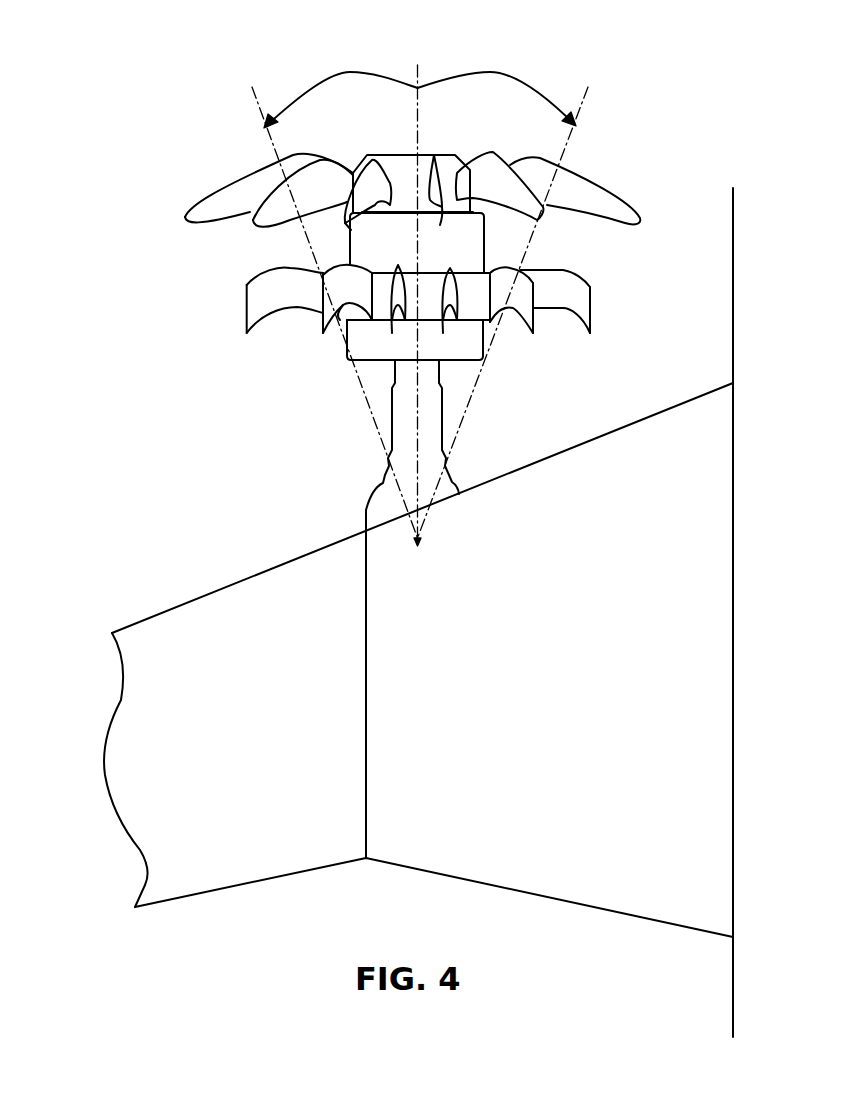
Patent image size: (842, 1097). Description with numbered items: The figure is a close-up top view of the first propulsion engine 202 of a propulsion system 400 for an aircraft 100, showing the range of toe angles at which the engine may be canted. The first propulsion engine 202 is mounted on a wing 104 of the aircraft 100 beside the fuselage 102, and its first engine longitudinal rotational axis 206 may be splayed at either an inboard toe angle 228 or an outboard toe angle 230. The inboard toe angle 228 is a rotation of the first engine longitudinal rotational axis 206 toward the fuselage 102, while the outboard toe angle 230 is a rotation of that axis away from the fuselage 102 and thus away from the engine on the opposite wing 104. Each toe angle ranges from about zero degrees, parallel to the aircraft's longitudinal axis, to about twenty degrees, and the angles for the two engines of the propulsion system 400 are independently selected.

The aircraft 100 is at (138, 120).
The fuselage 102 is at (743, 307).
The wing 104 is at (255, 585).
The first propulsion engine 202 is at (403, 435).
The first engine longitudinal rotational axis 206 is at (416, 64).
The inboard toe angle 228 is at (508, 78).
The outboard toe angle 230 is at (298, 92).
The propulsion system 400 is at (173, 314).